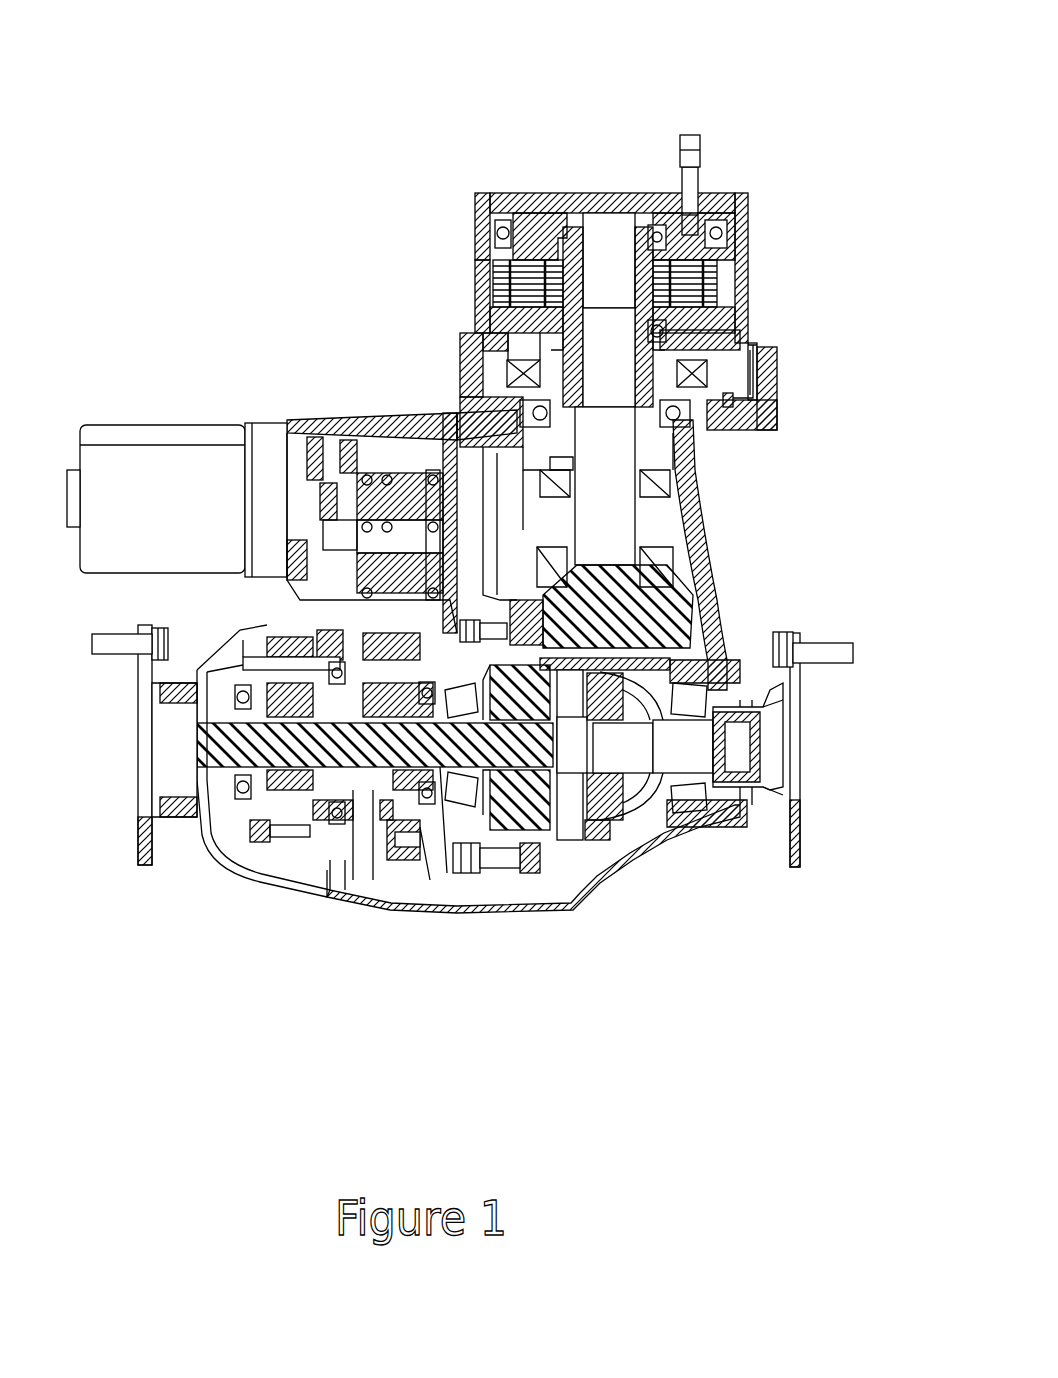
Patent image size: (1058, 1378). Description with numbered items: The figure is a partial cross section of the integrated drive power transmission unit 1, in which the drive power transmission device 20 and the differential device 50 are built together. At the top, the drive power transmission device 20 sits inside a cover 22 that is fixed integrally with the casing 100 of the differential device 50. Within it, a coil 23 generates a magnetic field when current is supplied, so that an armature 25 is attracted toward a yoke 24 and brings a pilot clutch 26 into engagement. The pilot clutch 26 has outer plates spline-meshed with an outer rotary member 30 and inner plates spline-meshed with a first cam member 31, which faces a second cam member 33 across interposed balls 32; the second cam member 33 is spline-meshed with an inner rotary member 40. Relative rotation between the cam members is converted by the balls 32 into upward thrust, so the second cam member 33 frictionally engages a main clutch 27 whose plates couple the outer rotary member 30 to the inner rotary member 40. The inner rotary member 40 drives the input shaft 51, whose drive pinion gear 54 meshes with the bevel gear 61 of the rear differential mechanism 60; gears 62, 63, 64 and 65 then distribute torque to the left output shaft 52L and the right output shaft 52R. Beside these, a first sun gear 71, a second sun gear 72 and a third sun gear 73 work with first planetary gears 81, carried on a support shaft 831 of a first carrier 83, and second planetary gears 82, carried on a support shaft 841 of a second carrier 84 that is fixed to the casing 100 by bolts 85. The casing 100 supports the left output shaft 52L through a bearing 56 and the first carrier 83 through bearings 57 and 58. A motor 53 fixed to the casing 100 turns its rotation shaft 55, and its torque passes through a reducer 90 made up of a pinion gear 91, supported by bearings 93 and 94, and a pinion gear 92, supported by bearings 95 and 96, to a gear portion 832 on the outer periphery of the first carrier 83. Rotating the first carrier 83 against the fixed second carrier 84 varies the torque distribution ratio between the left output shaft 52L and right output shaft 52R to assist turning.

The drive power transmission unit 1 is at (722, 120).
The drive power transmission device 20 is at (752, 254).
The cover 22 is at (748, 213).
The coil 23 is at (762, 377).
The yoke 24 is at (746, 360).
The armature 25 is at (664, 329).
The pilot clutch 26 is at (483, 307).
The main clutch 27 is at (530, 250).
The outer rotary member 30 is at (740, 292).
The first cam member 31 is at (742, 316).
The balls 32 is at (740, 305).
The second cam member 33 is at (637, 300).
The inner rotary member 40 is at (620, 228).
The differential device 50 is at (700, 507).
The input shaft 51 is at (705, 530).
The left output shaft 52L is at (203, 802).
The right output shaft 52R is at (713, 814).
The motor 53 is at (127, 424).
The drive pinion gear 54 is at (699, 603).
The rotation shaft 55 is at (300, 470).
The bearing 56 is at (185, 775).
The bearing 57 is at (328, 842).
The bearing 58 is at (457, 887).
The rear differential mechanism 60 is at (570, 845).
The bevel gear 61 is at (495, 880).
The gear 62 is at (632, 665).
The gear 63 is at (597, 842).
The gear 64 is at (641, 837).
The gear 65 is at (530, 880).
The first sun gear 71 is at (400, 880).
The second sun gear 72 is at (300, 840).
The third sun gear 73 is at (283, 833).
The first planetary gears 81 is at (340, 605).
The second planetary gears 82 is at (300, 633).
The first carrier 83 is at (425, 880).
The second carrier 84 is at (330, 640).
The bolts 85 is at (283, 845).
The reducer 90 is at (380, 446).
The pinion gear 91 is at (382, 422).
The pinion gear 92 is at (345, 560).
The bearing 93 is at (375, 452).
The bearing 94 is at (415, 470).
The bearing 95 is at (300, 560).
The bearing 96 is at (442, 468).
The casing 100 is at (365, 925).
The support shaft 831 is at (300, 718).
The gear portion 832 is at (403, 872).
The support shaft 841 is at (245, 667).